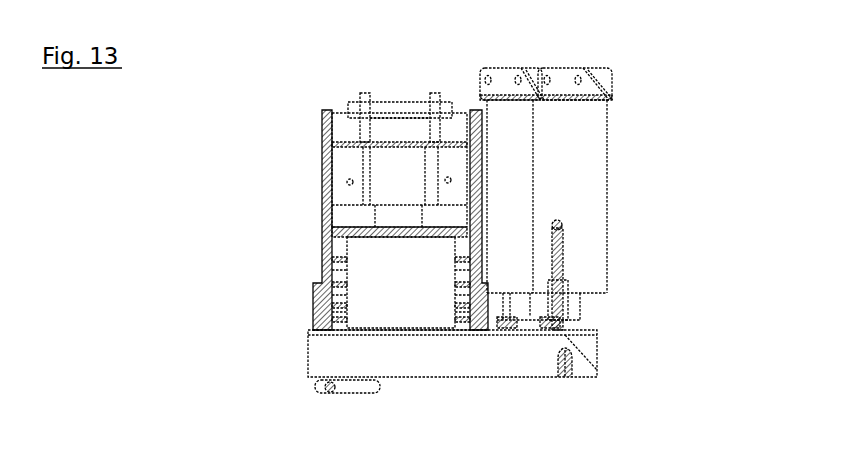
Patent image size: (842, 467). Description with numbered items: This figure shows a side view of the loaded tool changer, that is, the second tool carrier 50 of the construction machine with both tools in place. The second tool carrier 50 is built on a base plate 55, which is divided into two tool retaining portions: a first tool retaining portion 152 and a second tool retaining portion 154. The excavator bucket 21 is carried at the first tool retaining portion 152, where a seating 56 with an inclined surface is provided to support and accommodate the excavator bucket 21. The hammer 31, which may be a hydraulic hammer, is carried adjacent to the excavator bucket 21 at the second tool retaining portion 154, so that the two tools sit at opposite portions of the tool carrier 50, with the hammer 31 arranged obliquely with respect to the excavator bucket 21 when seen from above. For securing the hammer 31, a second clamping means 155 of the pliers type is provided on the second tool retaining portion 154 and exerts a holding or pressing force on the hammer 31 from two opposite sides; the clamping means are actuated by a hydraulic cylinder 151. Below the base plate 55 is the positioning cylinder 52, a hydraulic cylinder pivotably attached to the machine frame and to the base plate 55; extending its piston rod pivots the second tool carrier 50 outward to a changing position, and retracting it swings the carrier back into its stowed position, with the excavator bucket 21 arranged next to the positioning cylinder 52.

The second tool carrier 50 is at (222, 178).
The excavator bucket 21 is at (400, 173).
The hammer 31 is at (580, 132).
The seating 56 is at (373, 288).
The first tool retaining portion 152 is at (373, 327).
The base plate 55 is at (488, 375).
The positioning cylinder 52 is at (357, 392).
The second clamping means 155 is at (558, 250).
The second tool retaining portion 154 is at (540, 335).
The hydraulic cylinder 151 is at (520, 322).